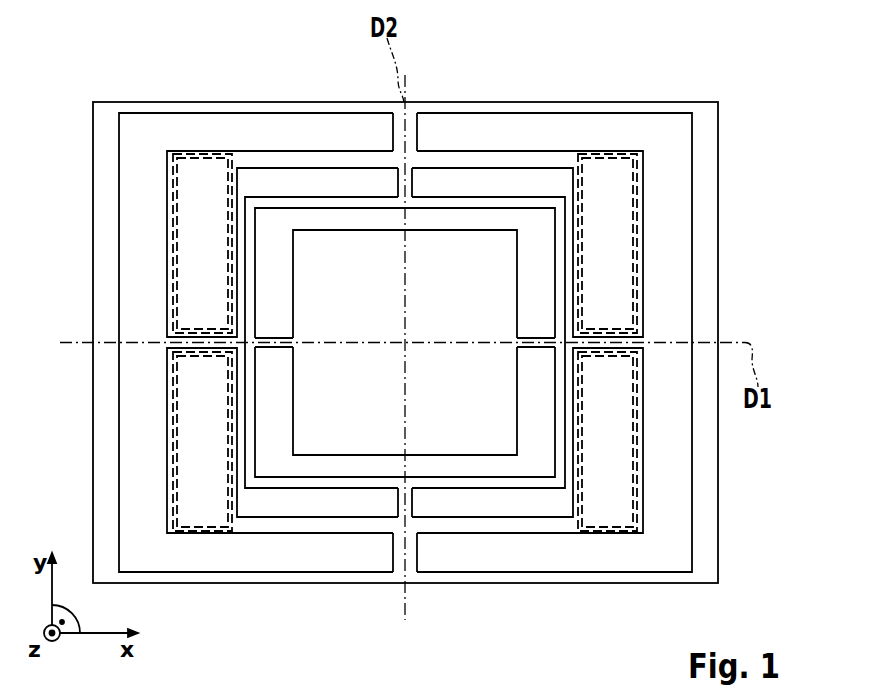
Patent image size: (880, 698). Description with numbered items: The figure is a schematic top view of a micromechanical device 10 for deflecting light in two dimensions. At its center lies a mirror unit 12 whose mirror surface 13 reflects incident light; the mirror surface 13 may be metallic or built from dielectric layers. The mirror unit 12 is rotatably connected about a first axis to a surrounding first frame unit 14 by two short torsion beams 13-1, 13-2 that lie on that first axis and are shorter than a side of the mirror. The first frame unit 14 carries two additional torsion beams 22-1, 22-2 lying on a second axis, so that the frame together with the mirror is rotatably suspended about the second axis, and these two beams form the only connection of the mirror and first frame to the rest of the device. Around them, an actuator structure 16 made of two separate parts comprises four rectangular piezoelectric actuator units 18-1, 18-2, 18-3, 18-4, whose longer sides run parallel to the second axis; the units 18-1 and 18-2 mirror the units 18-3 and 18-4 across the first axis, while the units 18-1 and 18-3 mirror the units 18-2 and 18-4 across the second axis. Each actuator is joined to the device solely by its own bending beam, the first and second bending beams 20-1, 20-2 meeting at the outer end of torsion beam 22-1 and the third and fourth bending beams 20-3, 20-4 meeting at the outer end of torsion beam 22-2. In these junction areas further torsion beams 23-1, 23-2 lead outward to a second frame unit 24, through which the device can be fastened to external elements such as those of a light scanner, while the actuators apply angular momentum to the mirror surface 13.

The micromechanical device 10 is at (685, 53).
The mirror unit 12 is at (348, 437).
The mirror surface 13 is at (307, 436).
The torsion beam 13-1 is at (280, 339).
The torsion beam 13-2 is at (530, 339).
The first frame unit 14 is at (273, 483).
The actuator structure 16 is at (247, 527).
The first piezoelectric actuator unit 18-1 is at (170, 230).
The second piezoelectric actuator unit 18-2 is at (642, 230).
The third piezoelectric actuator unit 18-3 is at (170, 450).
The fourth piezoelectric actuator unit 18-4 is at (642, 450).
The first bending beam 20-1 is at (267, 163).
The second bending beam 20-2 is at (528, 163).
The third bending beam 20-3 is at (363, 525).
The fourth bending beam 20-4 is at (548, 522).
The additional torsion beam 22-1 is at (398, 183).
The additional torsion beam 22-2 is at (410, 497).
The torsion beam 23-1 is at (415, 131).
The torsion beam 23-2 is at (412, 548).
The second frame unit 24 is at (165, 112).